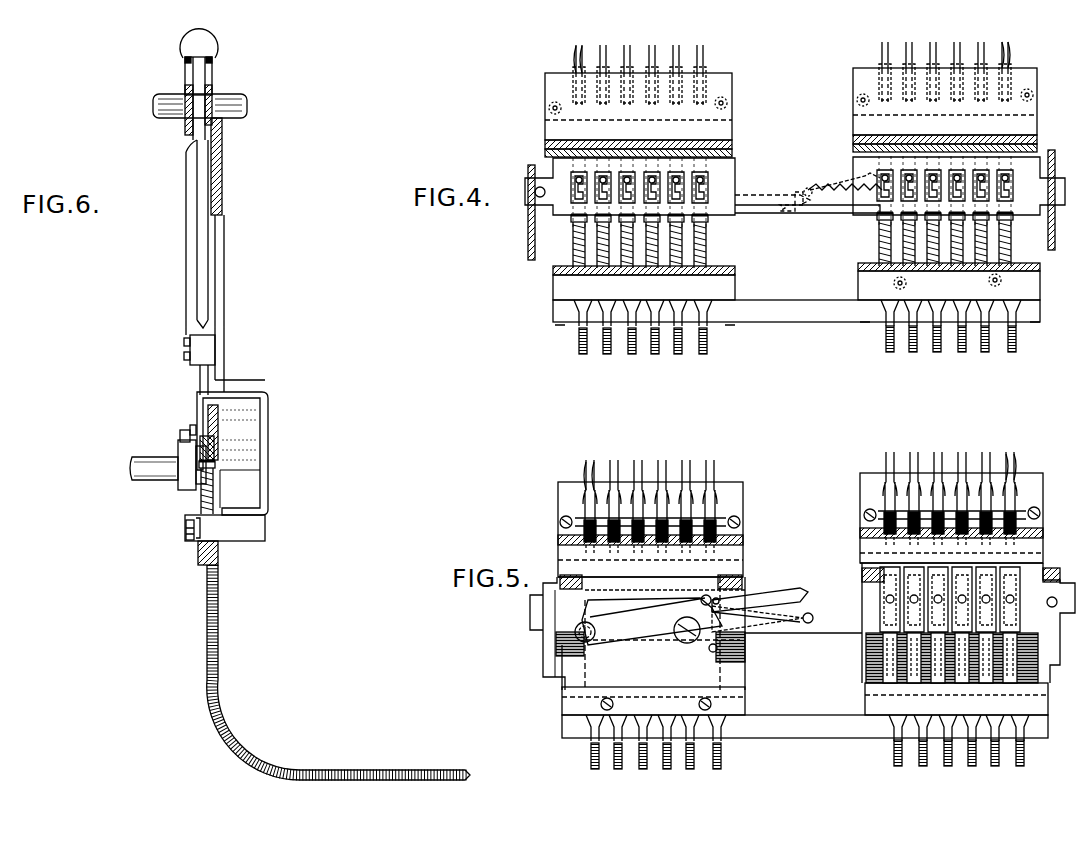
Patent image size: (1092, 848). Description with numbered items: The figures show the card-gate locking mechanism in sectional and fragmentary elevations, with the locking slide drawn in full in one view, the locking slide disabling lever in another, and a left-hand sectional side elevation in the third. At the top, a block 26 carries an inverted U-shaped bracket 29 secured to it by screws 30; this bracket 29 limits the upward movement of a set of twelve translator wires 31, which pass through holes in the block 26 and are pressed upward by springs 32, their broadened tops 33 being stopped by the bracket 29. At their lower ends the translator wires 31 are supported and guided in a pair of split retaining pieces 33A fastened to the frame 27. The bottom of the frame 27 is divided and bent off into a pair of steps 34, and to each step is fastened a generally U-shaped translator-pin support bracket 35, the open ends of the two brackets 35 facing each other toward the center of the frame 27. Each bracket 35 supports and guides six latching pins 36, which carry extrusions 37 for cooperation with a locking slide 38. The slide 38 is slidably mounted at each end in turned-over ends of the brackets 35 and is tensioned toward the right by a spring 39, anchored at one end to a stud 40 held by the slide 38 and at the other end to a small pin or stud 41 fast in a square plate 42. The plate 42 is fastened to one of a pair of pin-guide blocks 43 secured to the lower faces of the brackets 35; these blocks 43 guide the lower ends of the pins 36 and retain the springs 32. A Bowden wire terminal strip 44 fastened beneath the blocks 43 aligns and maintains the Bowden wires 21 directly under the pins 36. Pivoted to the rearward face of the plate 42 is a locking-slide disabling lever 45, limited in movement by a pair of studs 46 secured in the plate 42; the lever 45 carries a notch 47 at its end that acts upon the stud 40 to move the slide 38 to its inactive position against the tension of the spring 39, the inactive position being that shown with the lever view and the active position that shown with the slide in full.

In FIG. 6, the Bowden wires 21 is at (218, 635).
In FIG. 4, the Bowden wires 21 is at (650, 352).
In FIG. 5, the Bowden wires 21 is at (648, 770).
In FIG. 6, the block 26 is at (188, 130).
In FIG. 6, the frame 27 is at (222, 185).
In FIG. 4, the frame 27 is at (725, 128).
In FIG. 5, the frame 27 is at (738, 503).
In FIG. 6, the bracket 29 is at (199, 43).
In FIG. 6, the screws 30 is at (186, 88).
In FIG. 6, the translator wires 31 is at (187, 232).
In FIG. 4, the translator wires 31 is at (672, 65).
In FIG. 5, the translator wires 31 is at (641, 462).
In FIG. 6, the springs 32 is at (205, 508).
In FIG. 4, the springs 32 is at (706, 250).
In FIG. 6, the broadened tops 33 is at (212, 75).
In FIG. 6, the split retaining pieces 33A is at (200, 350).
In FIG. 4, the split retaining pieces 33A is at (548, 108).
In FIG. 5, the split retaining pieces 33A is at (560, 518).
In FIG. 4, the steps 34 is at (545, 143).
In FIG. 5, the steps 34 is at (735, 552).
In FIG. 6, the translator-pin support brackets 35 is at (266, 400).
In FIG. 4, the translator-pin support brackets 35 is at (535, 252).
In FIG. 5, the translator-pin support brackets 35 is at (560, 590).
In FIG. 6, the latching pins 36 is at (216, 452).
In FIG. 4, the latching pins 36 is at (590, 238).
In FIG. 5, the latching pins 36 is at (712, 588).
In FIG. 4, the extrusions 37 is at (700, 180).
In FIG. 6, the locking slide 38 is at (218, 445).
In FIG. 4, the locking slide 38 is at (826, 178).
In FIG. 5, the locking slide 38 is at (530, 620).
In FIG. 4, the spring 39 is at (808, 188).
In FIG. 5, the spring 39 is at (760, 592).
In FIG. 6, the stud 40 is at (177, 433).
In FIG. 4, the stud 40 is at (796, 212).
In FIG. 5, the stud 40 is at (813, 618).
In FIG. 6, the pin or stud 41 is at (195, 432).
In FIG. 5, the pin or stud 41 is at (719, 601).
In FIG. 6, the square plate 42 is at (195, 540).
In FIG. 5, the square plate 42 is at (597, 668).
In FIG. 6, the pin-guide blocks 43 is at (240, 528).
In FIG. 4, the pin-guide blocks 43 is at (735, 290).
In FIG. 5, the pin-guide blocks 43 is at (745, 700).
In FIG. 6, the Bowden wire terminal strip 44 is at (218, 550).
In FIG. 4, the Bowden wire terminal strip 44 is at (800, 322).
In FIG. 5, the Bowden wire terminal strip 44 is at (832, 738).
In FIG. 4, the locking-slide disabling lever 45 is at (808, 215).
In FIG. 5, the locking-slide disabling lever 45 is at (643, 630).
In FIG. 5, the studs 46 is at (710, 650).
In FIG. 5, the notch 47 is at (797, 628).